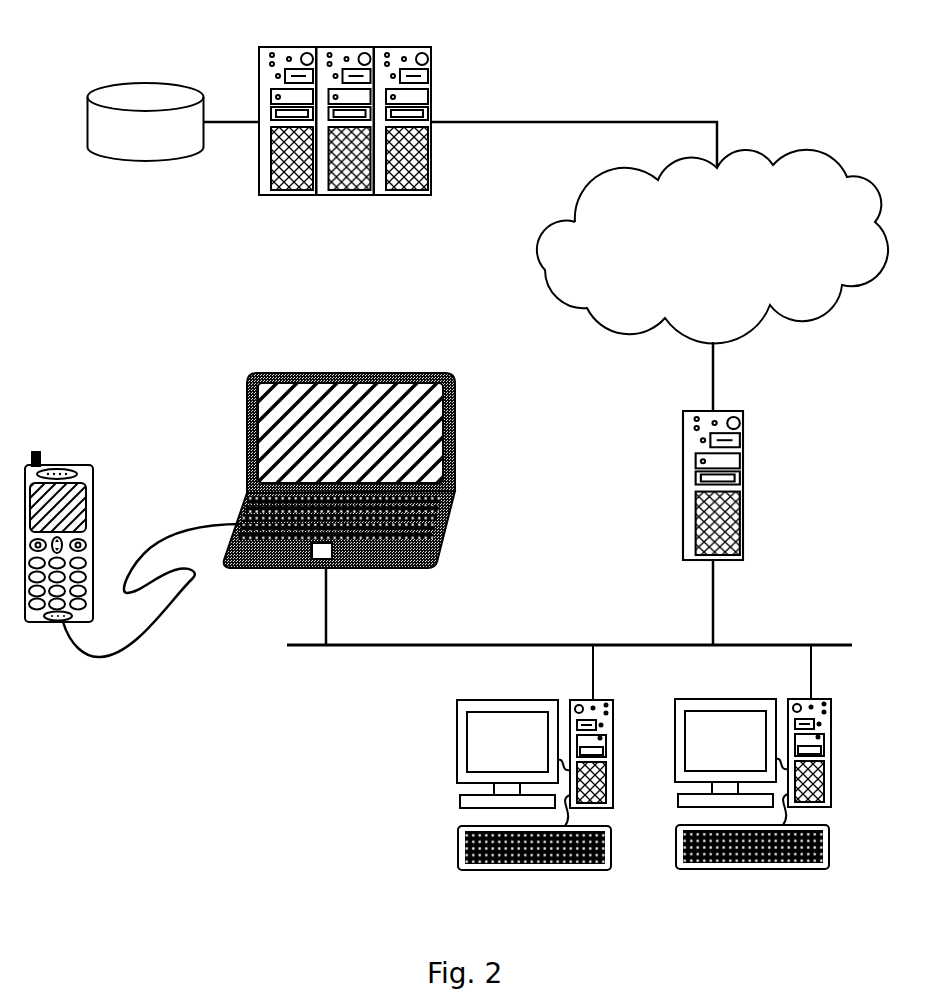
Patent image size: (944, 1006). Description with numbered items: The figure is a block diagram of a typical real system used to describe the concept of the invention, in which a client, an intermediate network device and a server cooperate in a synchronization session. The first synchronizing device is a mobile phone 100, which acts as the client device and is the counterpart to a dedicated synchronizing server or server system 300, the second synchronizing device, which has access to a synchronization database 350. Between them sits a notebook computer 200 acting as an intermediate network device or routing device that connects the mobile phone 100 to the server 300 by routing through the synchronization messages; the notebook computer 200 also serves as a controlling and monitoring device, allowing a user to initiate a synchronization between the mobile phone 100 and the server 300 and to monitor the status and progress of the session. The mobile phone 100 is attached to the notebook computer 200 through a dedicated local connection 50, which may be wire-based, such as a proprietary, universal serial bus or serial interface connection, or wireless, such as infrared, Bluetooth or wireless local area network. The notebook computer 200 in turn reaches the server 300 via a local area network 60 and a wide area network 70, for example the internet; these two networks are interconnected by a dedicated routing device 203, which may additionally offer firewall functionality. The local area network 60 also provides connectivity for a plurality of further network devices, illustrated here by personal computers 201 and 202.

The synchronization database 350 is at (151, 80).
The server system 300 is at (354, 42).
The wide area network 70 is at (535, 246).
The routing device 203 is at (676, 486).
The local area network 60 is at (530, 641).
The notebook computer 200 is at (362, 364).
The mobile phone 100 is at (62, 464).
The dedicated local connection 50 is at (135, 658).
The personal computer 201 is at (504, 692).
The personal computer 202 is at (723, 690).